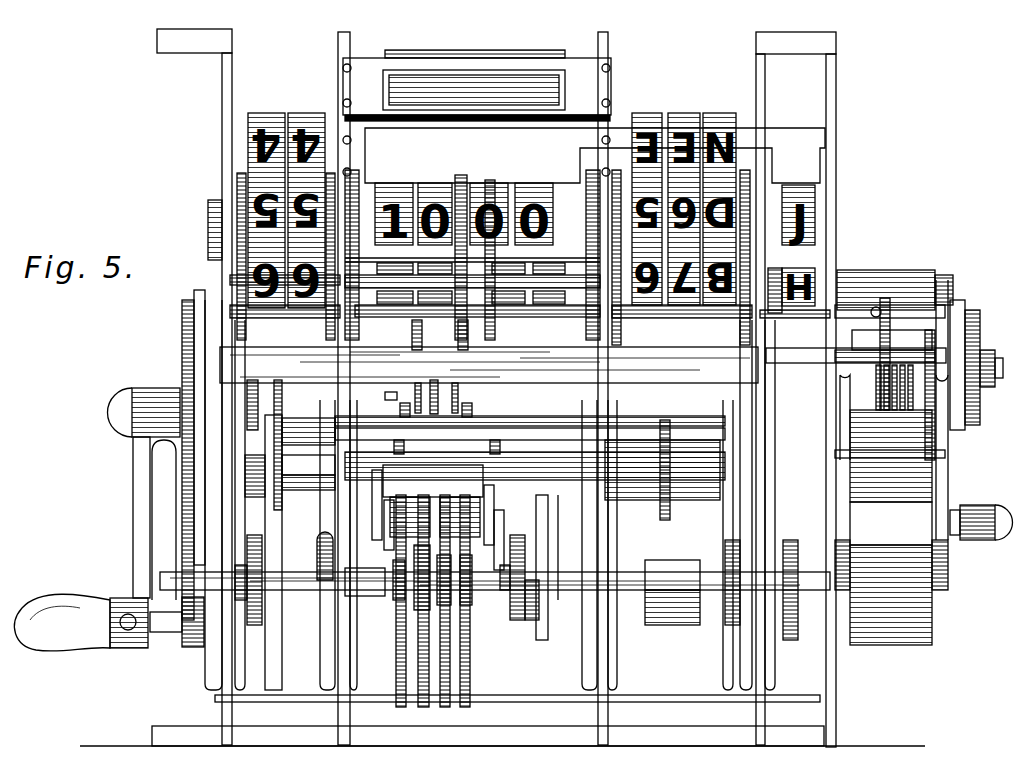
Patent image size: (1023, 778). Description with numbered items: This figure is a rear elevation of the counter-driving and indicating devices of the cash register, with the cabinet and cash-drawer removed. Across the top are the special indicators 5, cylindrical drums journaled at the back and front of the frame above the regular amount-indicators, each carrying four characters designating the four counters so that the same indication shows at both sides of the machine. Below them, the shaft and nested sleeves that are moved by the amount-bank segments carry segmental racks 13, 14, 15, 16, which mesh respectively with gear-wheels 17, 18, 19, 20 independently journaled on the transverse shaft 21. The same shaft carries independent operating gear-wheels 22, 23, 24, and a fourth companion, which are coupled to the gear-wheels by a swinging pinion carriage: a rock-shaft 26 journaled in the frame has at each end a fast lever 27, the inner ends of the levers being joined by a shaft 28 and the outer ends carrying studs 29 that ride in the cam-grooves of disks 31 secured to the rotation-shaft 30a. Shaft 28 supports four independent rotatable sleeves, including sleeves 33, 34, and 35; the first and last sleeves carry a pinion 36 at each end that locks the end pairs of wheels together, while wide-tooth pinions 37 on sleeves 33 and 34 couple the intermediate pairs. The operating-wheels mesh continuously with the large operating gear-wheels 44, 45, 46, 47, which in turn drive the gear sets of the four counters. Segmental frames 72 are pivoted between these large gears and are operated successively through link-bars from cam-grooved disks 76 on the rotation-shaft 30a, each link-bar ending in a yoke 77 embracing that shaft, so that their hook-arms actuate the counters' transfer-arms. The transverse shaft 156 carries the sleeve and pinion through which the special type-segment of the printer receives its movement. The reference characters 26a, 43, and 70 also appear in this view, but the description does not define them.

The special indicators 5 is at (478, 48).
The segmental rack 13 is at (296, 418).
The segmental rack 14 is at (418, 352).
The segmental rack 15 is at (468, 356).
The segmental rack 16 is at (665, 385).
The gear-wheel 17 is at (262, 490).
The gear-wheel 18 is at (374, 520).
The gear-wheel 19 is at (494, 500).
The gear-wheel 20 is at (670, 500).
The transverse shaft 21 is at (484, 555).
The operating gear-wheel 22 is at (385, 398).
The operating gear-wheel 23 is at (386, 392).
The operating gear-wheel 24 is at (445, 470).
The rock-shaft 26 is at (566, 490).
The bar 26a is at (372, 452).
The lever 27 is at (268, 430).
The shaft 28 is at (690, 440).
The stud 29 is at (268, 590).
The rotation-shaft 30a is at (380, 598).
The disk 31 is at (258, 625).
The rotatable sleeve 33 is at (386, 505).
The rotatable sleeve 34 is at (436, 390).
The rotatable sleeve 35 is at (570, 427).
The pinion 36 is at (400, 405).
The wide-tooth pinion 37 is at (415, 395).
The gear 43 is at (472, 600).
The large operating gear-wheel 44 is at (400, 708).
The large operating gear-wheel 45 is at (423, 708).
The large operating gear-wheel 46 is at (445, 708).
The large operating gear-wheel 47 is at (466, 708).
The gear 70 is at (539, 610).
The segmental frame 72 is at (520, 620).
The cam-grooved disk 76 is at (396, 549).
The yoke 77 is at (396, 562).
The transverse shaft 156 is at (850, 305).